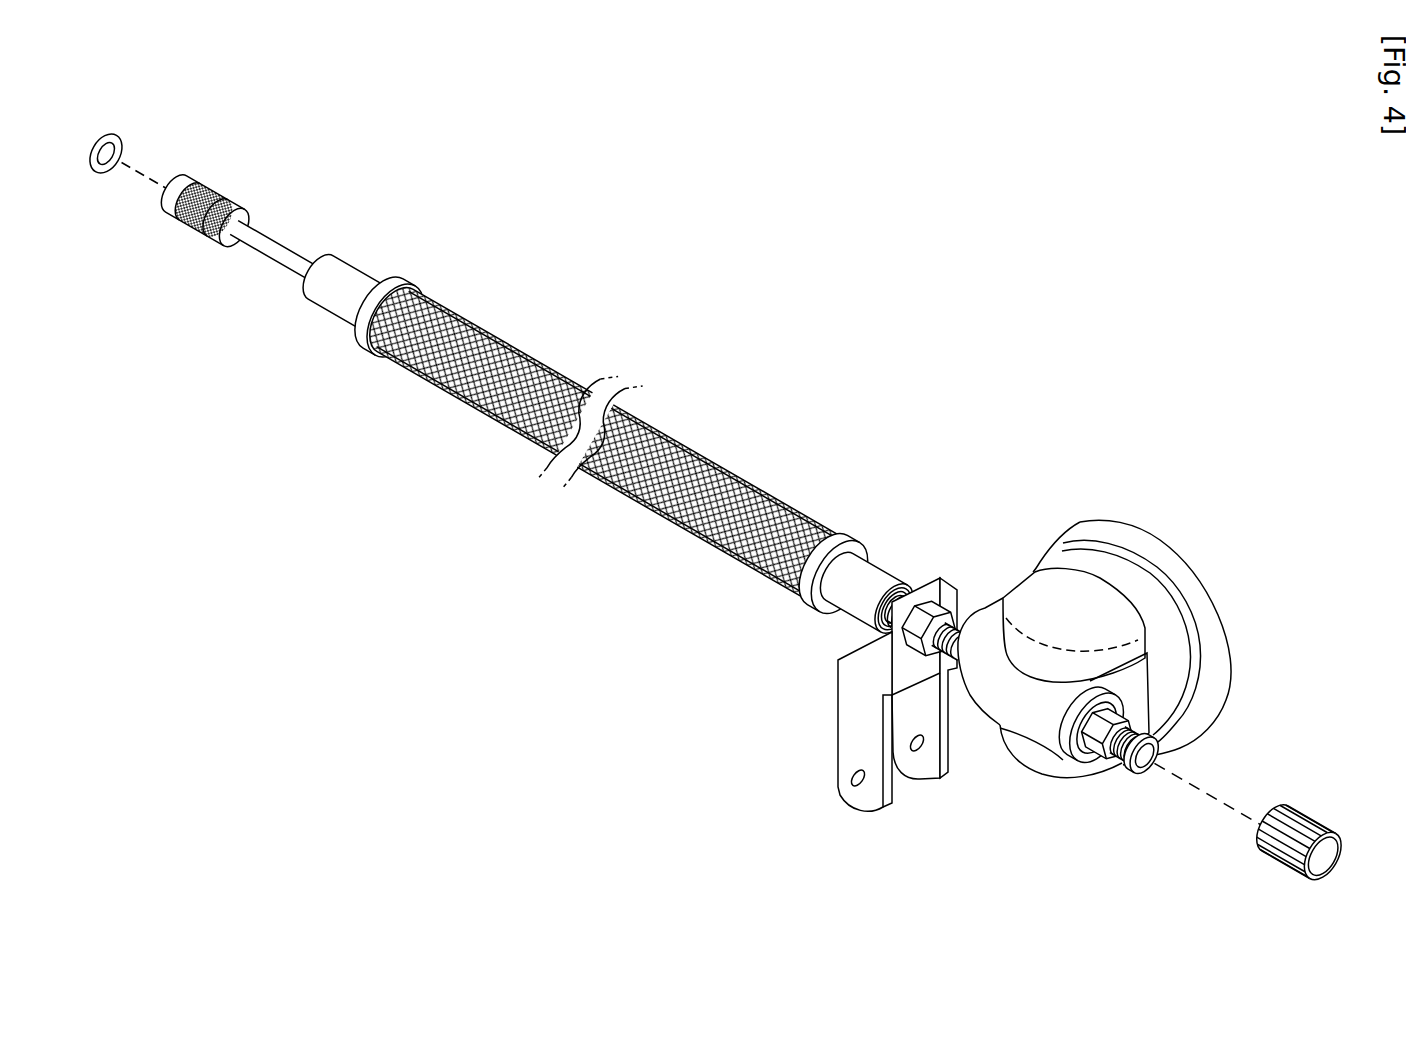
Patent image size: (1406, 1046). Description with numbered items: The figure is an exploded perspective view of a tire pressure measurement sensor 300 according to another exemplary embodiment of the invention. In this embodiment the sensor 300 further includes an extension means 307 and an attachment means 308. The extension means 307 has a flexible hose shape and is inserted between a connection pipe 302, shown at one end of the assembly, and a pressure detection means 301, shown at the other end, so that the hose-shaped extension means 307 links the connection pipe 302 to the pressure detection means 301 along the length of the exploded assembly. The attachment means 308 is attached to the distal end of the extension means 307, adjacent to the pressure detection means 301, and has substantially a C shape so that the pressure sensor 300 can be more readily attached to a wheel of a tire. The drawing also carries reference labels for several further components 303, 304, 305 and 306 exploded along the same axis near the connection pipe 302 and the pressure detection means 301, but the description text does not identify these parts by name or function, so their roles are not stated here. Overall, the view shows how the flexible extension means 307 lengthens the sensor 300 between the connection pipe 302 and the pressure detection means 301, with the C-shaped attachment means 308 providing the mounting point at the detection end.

The tire pressure measurement sensor 300 is at (757, 189).
The pressure detection means 301 is at (1157, 552).
The connection pipe 302 is at (283, 252).
The threaded stud 303 is at (1120, 777).
The knurled fitting 304 is at (218, 190).
The ring 305 is at (113, 138).
The cap 306 is at (1307, 820).
The extension means 307 is at (530, 362).
The attachment means 308 is at (847, 729).